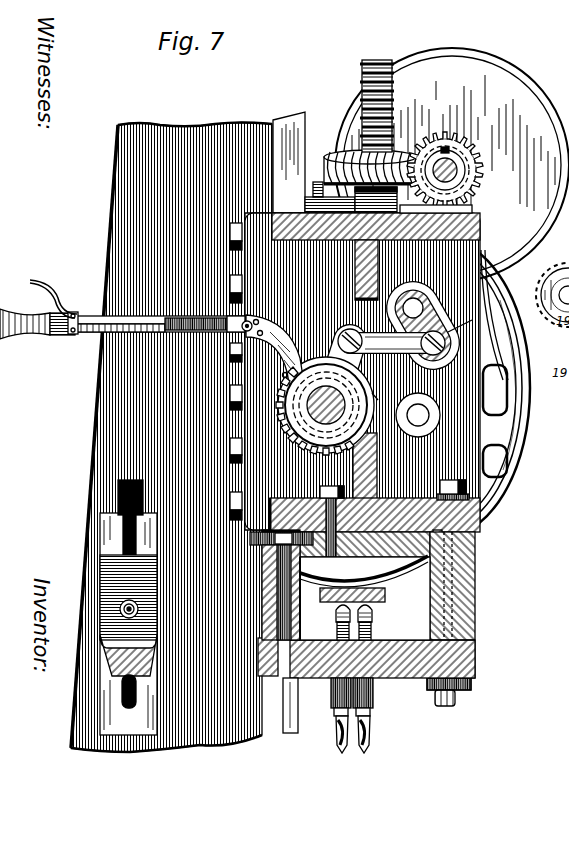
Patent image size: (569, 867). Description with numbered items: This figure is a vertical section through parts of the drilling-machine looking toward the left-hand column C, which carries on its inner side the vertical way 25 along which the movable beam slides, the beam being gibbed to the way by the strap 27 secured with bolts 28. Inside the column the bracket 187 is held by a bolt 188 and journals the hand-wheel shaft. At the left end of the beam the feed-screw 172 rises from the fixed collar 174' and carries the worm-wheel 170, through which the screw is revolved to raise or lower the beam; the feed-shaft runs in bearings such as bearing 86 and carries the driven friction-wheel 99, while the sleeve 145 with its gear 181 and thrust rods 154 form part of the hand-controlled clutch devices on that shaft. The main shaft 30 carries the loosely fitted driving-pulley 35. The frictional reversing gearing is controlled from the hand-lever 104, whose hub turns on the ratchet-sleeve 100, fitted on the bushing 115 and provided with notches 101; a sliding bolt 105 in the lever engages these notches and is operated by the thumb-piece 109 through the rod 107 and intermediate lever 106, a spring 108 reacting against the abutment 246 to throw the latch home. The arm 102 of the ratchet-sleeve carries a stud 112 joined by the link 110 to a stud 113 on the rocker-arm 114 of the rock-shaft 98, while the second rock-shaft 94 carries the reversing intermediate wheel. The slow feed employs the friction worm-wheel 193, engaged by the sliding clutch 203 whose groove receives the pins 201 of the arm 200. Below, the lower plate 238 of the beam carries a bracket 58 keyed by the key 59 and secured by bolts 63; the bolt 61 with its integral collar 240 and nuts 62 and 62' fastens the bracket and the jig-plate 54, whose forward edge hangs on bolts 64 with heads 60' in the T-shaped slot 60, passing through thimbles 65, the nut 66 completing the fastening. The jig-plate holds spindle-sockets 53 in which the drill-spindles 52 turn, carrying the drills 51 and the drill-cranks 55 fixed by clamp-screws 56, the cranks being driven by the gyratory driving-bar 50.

The vertical way 25 is at (298, 126).
The strap 27 is at (265, 232).
The bolts 28 is at (230, 292).
The main shaft 30 is at (326, 405).
The driving-pulley 35 is at (506, 444).
The gyratory driving-bar 50 is at (386, 595).
The drills 51 is at (360, 750).
The drill-spindles 52 is at (371, 716).
The spindle-sockets 53 is at (374, 690).
The jig-plate 54 is at (475, 660).
The drill-cranks 55 is at (373, 613).
The clamp-screws 56 is at (337, 619).
The bracket 58 is at (475, 580).
The key 59 is at (443, 535).
The T-shaped slot 60 is at (277, 573).
The bolt head 60' is at (272, 503).
The lower bolt 61 is at (472, 603).
The nut 62 is at (460, 693).
The upper nut 62' is at (484, 490).
The bolts 63 is at (322, 490).
The bolts 64 is at (300, 563).
The thimbles 65 is at (300, 624).
The nut 66 is at (293, 684).
The bearing 86 is at (459, 158).
The rock-shaft 94 is at (418, 415).
The rock-shaft 98 is at (418, 320).
The driven wheel 99 is at (477, 63).
The ratchet-sleeve 100 is at (296, 441).
The notches 101 is at (287, 410).
The arm 102 is at (326, 397).
The hand-lever 104 is at (6, 324).
The sliding bolt 105 is at (318, 357).
The intermediate lever 106 is at (251, 322).
The rod 107 is at (112, 332).
The spring 108 is at (218, 320).
The thumb-piece 109 is at (52, 293).
The link 110 is at (391, 344).
The stud 112 is at (350, 331).
The stud 113 is at (428, 353).
The rocker-arm 114 is at (449, 332).
The bushing 115 is at (373, 396).
The sleeve 145 is at (72, 331).
The thrust rods 154 is at (466, 143).
The worm-wheel 170 is at (348, 208).
The feed-screw 172 is at (380, 60).
The fixed collar 174' is at (462, 223).
The gear 181 is at (450, 145).
The bracket 187 is at (118, 646).
The bolt 188 is at (108, 607).
The worm-wheel 193 is at (547, 303).
The arm 200 is at (548, 279).
The pins 201 is at (549, 293).
The sliding clutch 203 is at (547, 318).
The lower plate 238 is at (470, 517).
The collar 240 is at (456, 637).
The abutment 246 is at (160, 328).
The left-hand column C is at (128, 207).